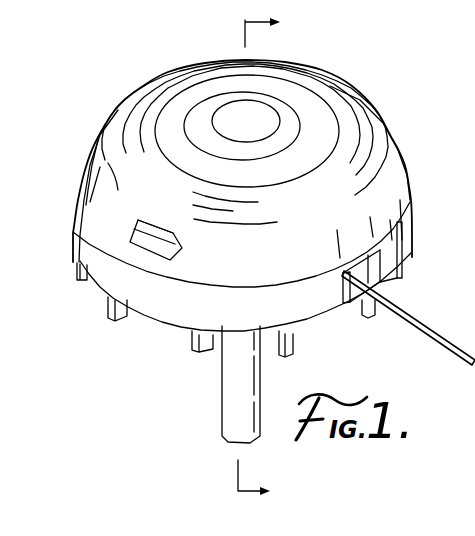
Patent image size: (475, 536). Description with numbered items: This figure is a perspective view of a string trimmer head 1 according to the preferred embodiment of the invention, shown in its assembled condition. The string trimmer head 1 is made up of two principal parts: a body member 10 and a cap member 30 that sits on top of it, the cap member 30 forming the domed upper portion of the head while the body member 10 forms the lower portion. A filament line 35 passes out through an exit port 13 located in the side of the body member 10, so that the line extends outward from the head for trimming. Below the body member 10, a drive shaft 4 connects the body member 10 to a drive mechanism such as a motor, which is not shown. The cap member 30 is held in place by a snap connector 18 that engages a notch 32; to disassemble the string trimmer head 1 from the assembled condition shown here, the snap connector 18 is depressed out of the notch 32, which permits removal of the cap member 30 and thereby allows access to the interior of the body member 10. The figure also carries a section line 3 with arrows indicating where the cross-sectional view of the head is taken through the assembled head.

The string trimmer head 1 is at (104, 78).
The section line 3- 3 is at (270, 260).
The drive shaft 4 is at (233, 408).
The body member 10 is at (120, 273).
The exit port 13 is at (378, 260).
The snap connector 18 is at (150, 246).
The cap member 30 is at (377, 127).
The notch 32 is at (175, 252).
The filament line 35 is at (450, 314).